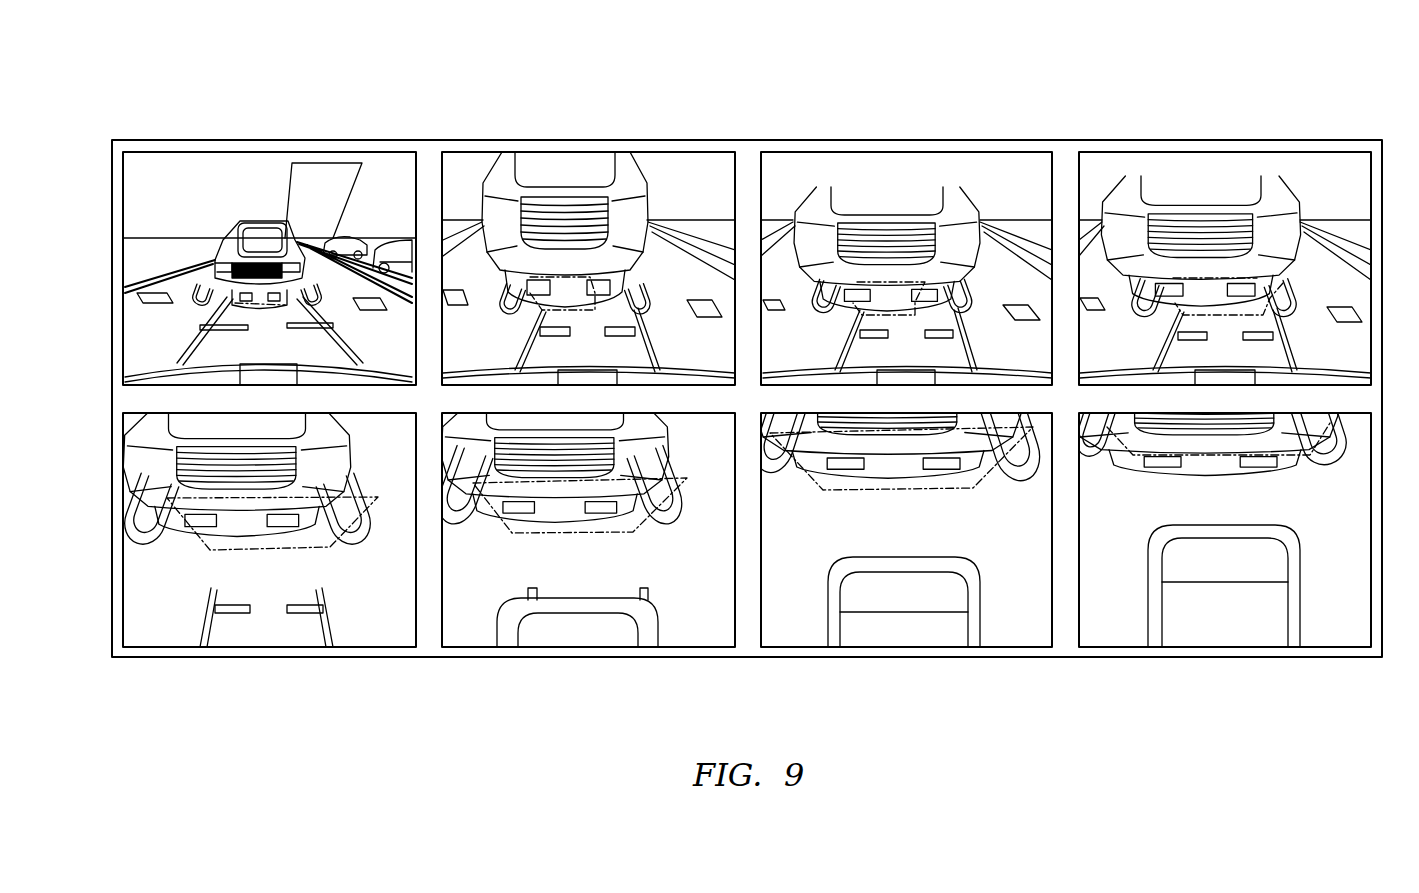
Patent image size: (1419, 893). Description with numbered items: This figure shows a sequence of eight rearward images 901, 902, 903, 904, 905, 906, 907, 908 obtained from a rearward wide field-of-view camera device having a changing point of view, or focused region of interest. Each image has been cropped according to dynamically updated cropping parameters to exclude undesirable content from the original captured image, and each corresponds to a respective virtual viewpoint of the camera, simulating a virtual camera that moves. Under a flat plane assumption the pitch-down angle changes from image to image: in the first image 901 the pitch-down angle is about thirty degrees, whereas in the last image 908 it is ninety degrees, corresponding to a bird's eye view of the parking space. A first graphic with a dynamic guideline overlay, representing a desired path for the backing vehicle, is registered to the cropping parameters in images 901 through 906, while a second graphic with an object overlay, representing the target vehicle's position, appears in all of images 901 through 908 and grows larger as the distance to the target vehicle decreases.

The captured image 901 is at (263, 138).
The captured image 902 is at (568, 138).
The captured image 903 is at (898, 138).
The captured image 904 is at (1203, 138).
The captured image 905 is at (263, 662).
The captured image 906 is at (570, 662).
The captured image 907 is at (897, 662).
The captured image 908 is at (1205, 662).